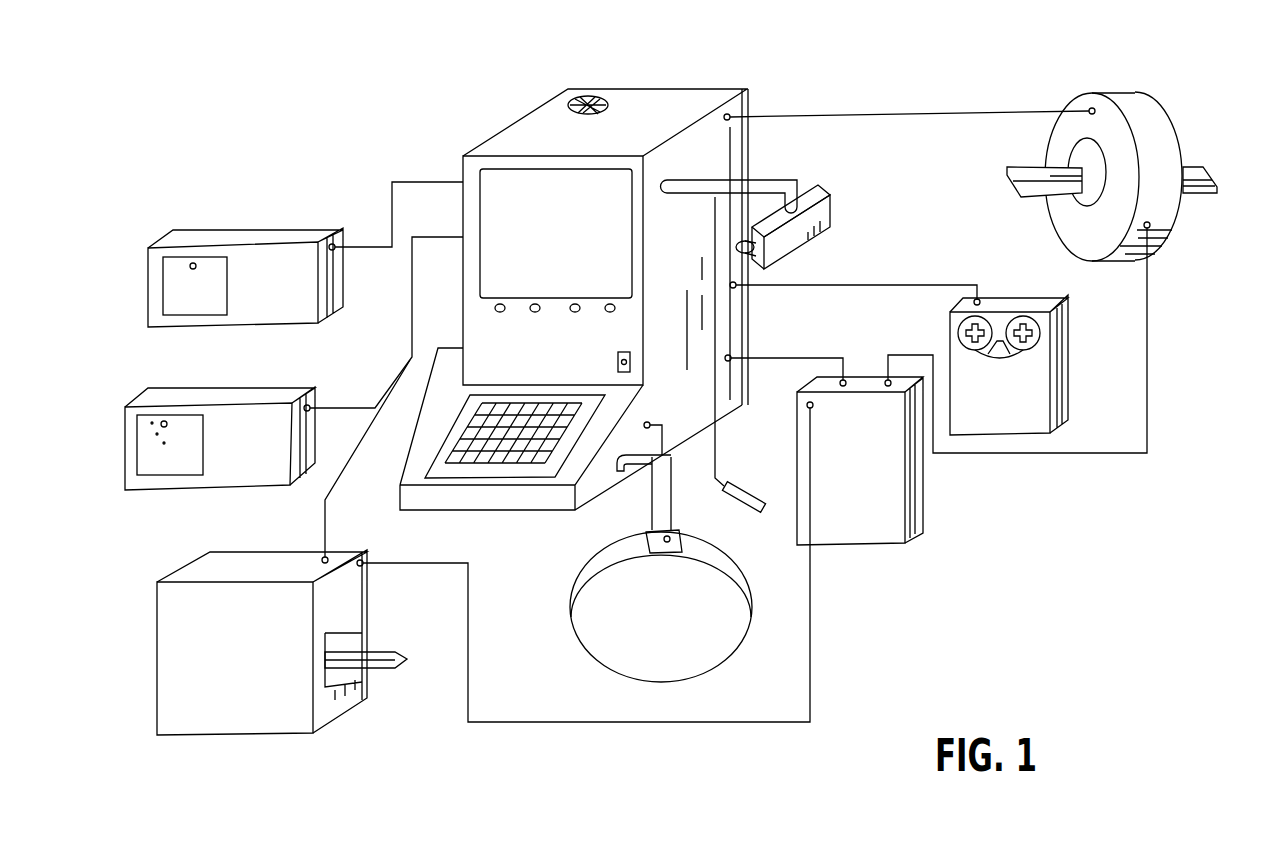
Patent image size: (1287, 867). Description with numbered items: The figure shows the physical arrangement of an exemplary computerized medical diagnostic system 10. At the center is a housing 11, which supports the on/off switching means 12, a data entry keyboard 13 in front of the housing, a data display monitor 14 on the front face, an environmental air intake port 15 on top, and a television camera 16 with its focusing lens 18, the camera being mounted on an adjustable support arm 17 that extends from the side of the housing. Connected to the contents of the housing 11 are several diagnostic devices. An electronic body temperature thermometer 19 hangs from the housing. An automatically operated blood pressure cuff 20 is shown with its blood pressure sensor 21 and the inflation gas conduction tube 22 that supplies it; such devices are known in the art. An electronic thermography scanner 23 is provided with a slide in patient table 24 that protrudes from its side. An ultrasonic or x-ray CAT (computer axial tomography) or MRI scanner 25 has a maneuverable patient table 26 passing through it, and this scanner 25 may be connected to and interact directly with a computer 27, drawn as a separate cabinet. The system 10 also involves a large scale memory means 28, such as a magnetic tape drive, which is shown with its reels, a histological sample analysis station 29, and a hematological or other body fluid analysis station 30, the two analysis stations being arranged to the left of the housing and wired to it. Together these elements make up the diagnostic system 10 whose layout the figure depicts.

The computerized medical diagnostic system 10 is at (935, 603).
The housing 11 is at (514, 125).
The on/off switching means 12 is at (633, 357).
The data entry keyboard 13 is at (466, 465).
The data display monitor 14 is at (505, 185).
The environmental air intake port 15 is at (588, 97).
The television camera 16 is at (830, 207).
The adjustable support arm 17 is at (760, 182).
The focusing lens 18 is at (770, 250).
The electronic body temperature thermometer 19 is at (751, 518).
The blood pressure cuff 20 is at (710, 660).
The blood pressure sensor 21 is at (682, 537).
The inflation gas conduction tube 22 is at (630, 487).
The electronic thermography scanner 23 is at (240, 714).
The slide in patient table 24 is at (392, 661).
The CAT scanner 25 is at (1187, 236).
The maneuverable patient table 26 is at (1213, 168).
The computer 27 is at (915, 495).
The large scale memory means 28 is at (1057, 355).
The histological sample analysis station 29 is at (290, 225).
The hematological or other body fluid analysis station 30 is at (163, 497).